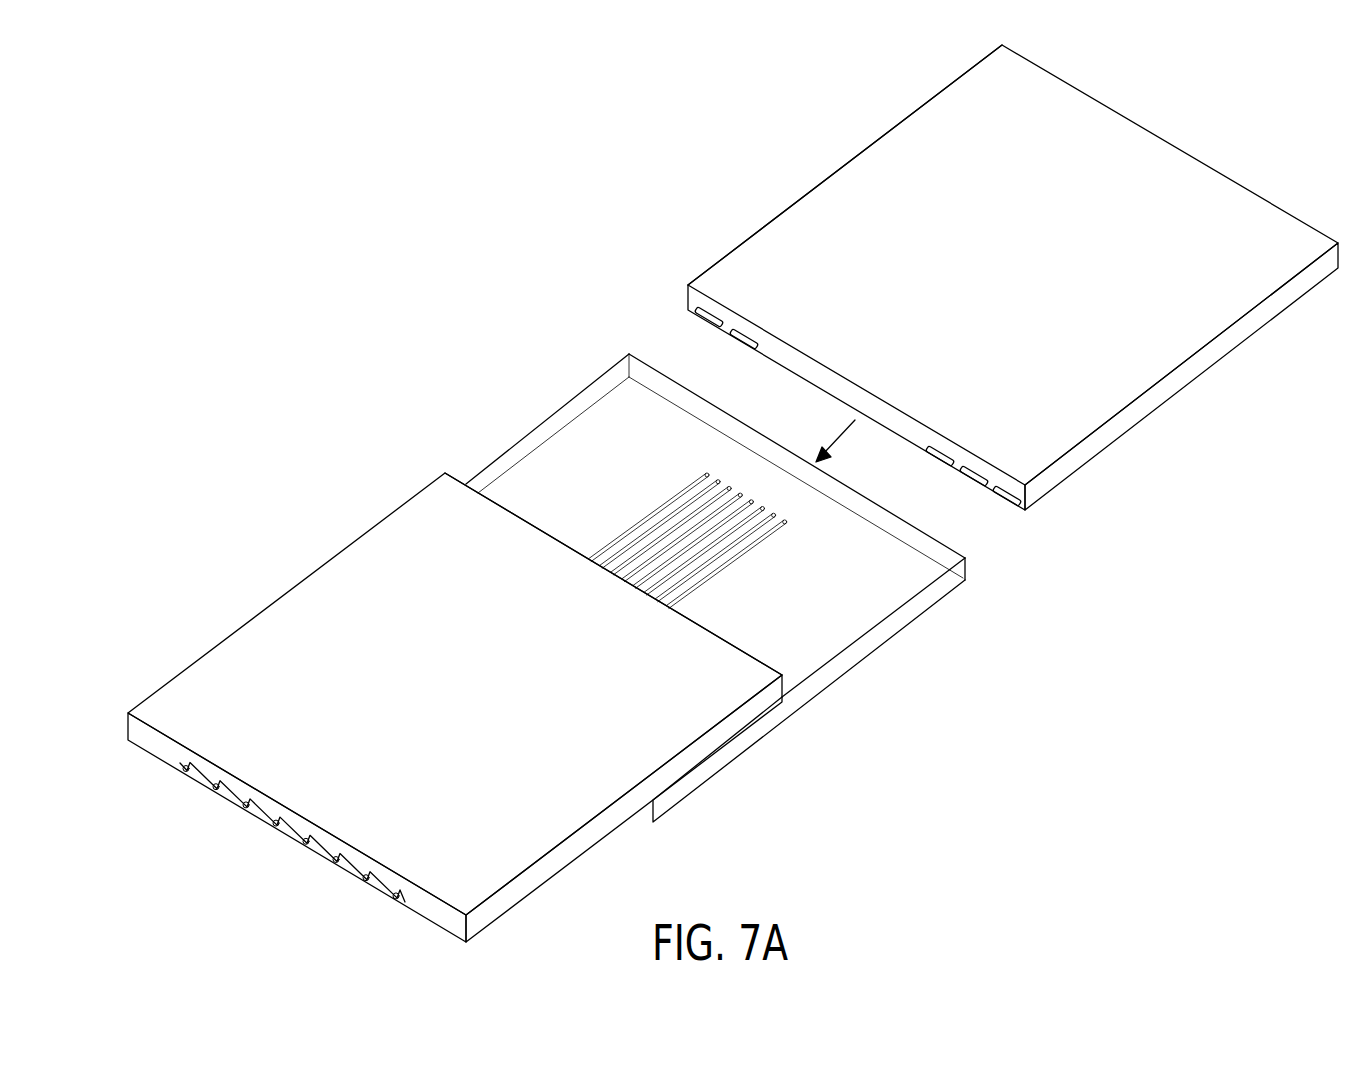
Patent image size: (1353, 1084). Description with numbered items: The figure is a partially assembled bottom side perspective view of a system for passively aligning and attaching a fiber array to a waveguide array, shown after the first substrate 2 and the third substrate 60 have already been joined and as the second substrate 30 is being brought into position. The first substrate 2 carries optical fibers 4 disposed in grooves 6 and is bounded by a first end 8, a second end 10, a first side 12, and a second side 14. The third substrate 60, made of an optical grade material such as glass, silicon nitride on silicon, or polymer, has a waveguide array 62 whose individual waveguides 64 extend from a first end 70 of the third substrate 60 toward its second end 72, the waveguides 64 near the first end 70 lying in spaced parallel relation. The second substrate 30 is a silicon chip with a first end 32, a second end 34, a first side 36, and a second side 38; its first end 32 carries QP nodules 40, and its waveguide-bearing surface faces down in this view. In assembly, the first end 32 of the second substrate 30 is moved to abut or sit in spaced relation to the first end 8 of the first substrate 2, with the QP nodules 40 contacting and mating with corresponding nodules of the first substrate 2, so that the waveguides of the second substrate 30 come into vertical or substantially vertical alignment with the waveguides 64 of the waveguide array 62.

The first substrate 2 is at (455, 680).
The optical fibers 4 is at (333, 862).
The grooves 6 is at (350, 873).
The first end 8 is at (453, 477).
The second end 10 is at (297, 827).
The first side 12 is at (357, 538).
The second side 14 is at (565, 862).
The second substrate 30 is at (1011, 275).
The first end 32 is at (1005, 480).
The second end 34 is at (1242, 185).
The first side 36 is at (796, 203).
The second side 38 is at (1110, 437).
The QP nodules 40 is at (712, 314).
The third substrate 60 is at (715, 618).
The waveguide array 62 is at (742, 608).
The waveguides 64 is at (762, 472).
The first end 70 is at (866, 482).
The second end 72 is at (638, 810).